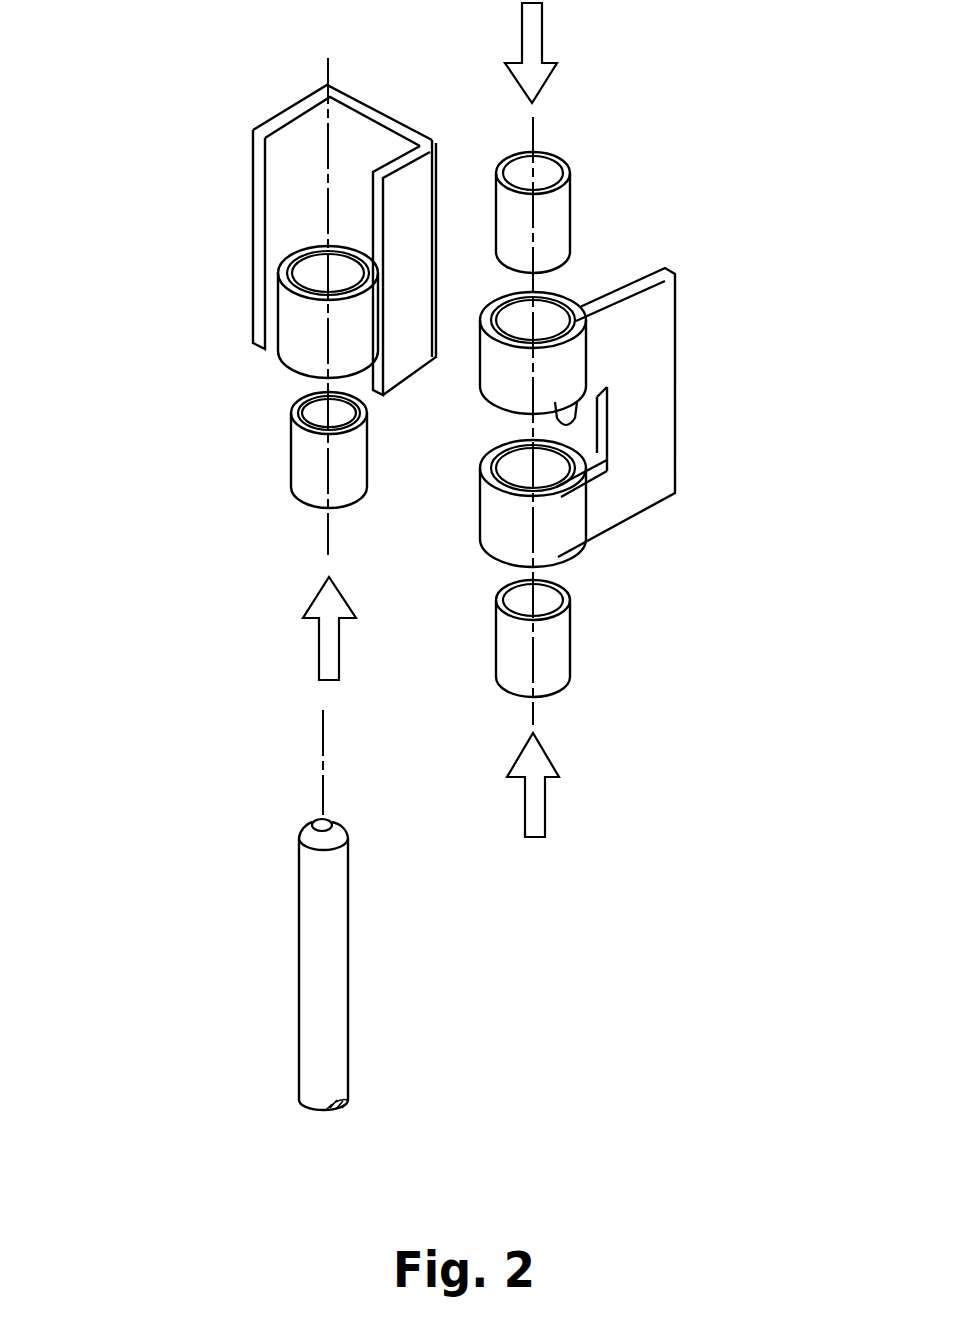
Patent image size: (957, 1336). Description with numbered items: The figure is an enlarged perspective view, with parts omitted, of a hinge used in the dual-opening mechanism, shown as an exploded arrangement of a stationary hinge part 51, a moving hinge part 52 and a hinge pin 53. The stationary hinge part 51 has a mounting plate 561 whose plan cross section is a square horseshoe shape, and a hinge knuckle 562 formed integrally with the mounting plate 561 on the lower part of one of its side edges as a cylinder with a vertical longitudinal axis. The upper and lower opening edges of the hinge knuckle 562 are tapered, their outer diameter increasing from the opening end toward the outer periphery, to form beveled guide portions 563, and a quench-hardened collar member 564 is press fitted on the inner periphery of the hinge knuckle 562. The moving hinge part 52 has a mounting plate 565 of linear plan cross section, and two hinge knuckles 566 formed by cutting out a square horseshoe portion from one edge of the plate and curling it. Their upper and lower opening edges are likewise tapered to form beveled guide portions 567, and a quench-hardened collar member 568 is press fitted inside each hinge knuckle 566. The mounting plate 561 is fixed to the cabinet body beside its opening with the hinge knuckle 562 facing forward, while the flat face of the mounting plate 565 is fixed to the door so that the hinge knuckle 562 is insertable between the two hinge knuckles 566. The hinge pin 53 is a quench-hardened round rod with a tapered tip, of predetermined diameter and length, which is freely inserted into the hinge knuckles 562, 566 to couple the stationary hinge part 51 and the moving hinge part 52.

The stationary hinge part 51 is at (222, 176).
The moving hinge part 52 is at (645, 552).
The hinge pin 53 is at (380, 937).
The mounting plate 561 is at (387, 112).
The hinge knuckle 562 is at (293, 353).
The beveled guide portion 563 is at (280, 282).
The collar member 564 is at (305, 483).
The mounting plate 565 is at (650, 383).
The hinge knuckle 566 is at (495, 525).
The beveled guide portion 567 is at (567, 293).
The collar member 568 is at (558, 213).